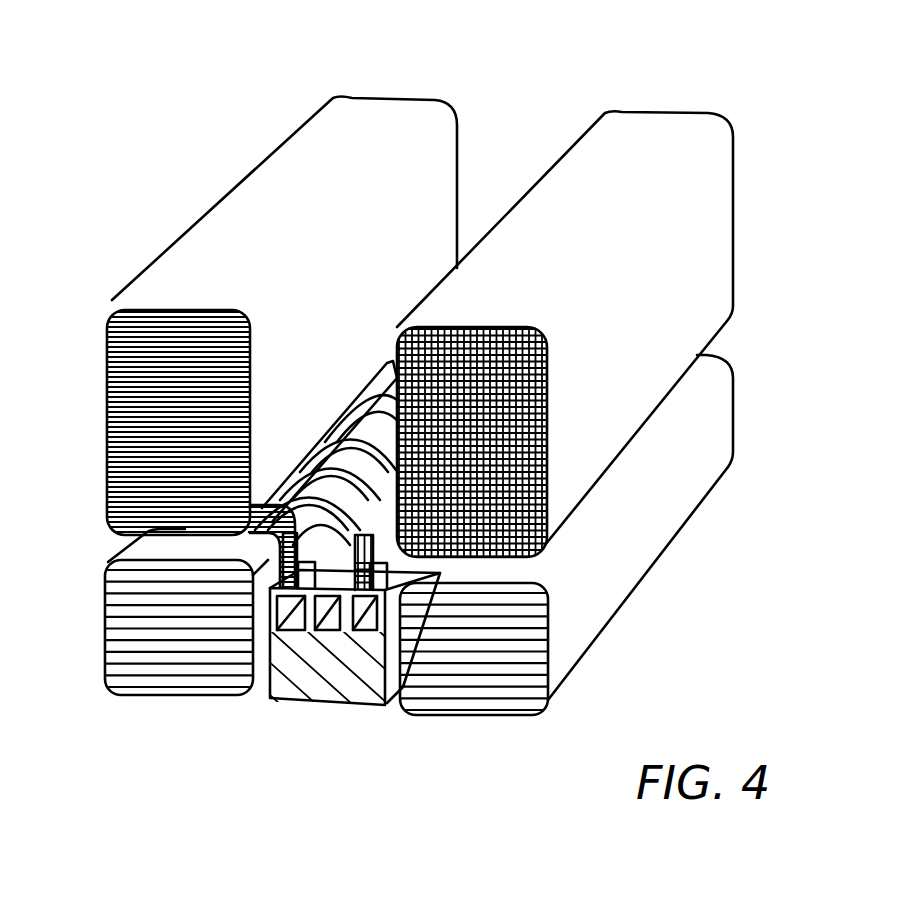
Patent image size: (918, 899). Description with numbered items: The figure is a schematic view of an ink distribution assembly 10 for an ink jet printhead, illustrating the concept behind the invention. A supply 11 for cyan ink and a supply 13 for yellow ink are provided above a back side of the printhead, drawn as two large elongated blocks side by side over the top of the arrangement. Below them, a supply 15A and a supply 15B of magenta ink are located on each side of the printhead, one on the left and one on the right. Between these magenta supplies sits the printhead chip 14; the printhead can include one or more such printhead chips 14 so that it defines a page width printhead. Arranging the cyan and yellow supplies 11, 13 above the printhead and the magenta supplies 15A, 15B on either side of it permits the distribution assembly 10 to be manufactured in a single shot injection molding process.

The ink distribution assembly 10 is at (87, 278).
The supply for cyan ink 11 is at (385, 96).
The supply for yellow ink 13 is at (655, 112).
The printhead chip 14 is at (325, 683).
The supply of magenta ink 15A is at (180, 677).
The supply of magenta ink 15B is at (430, 700).